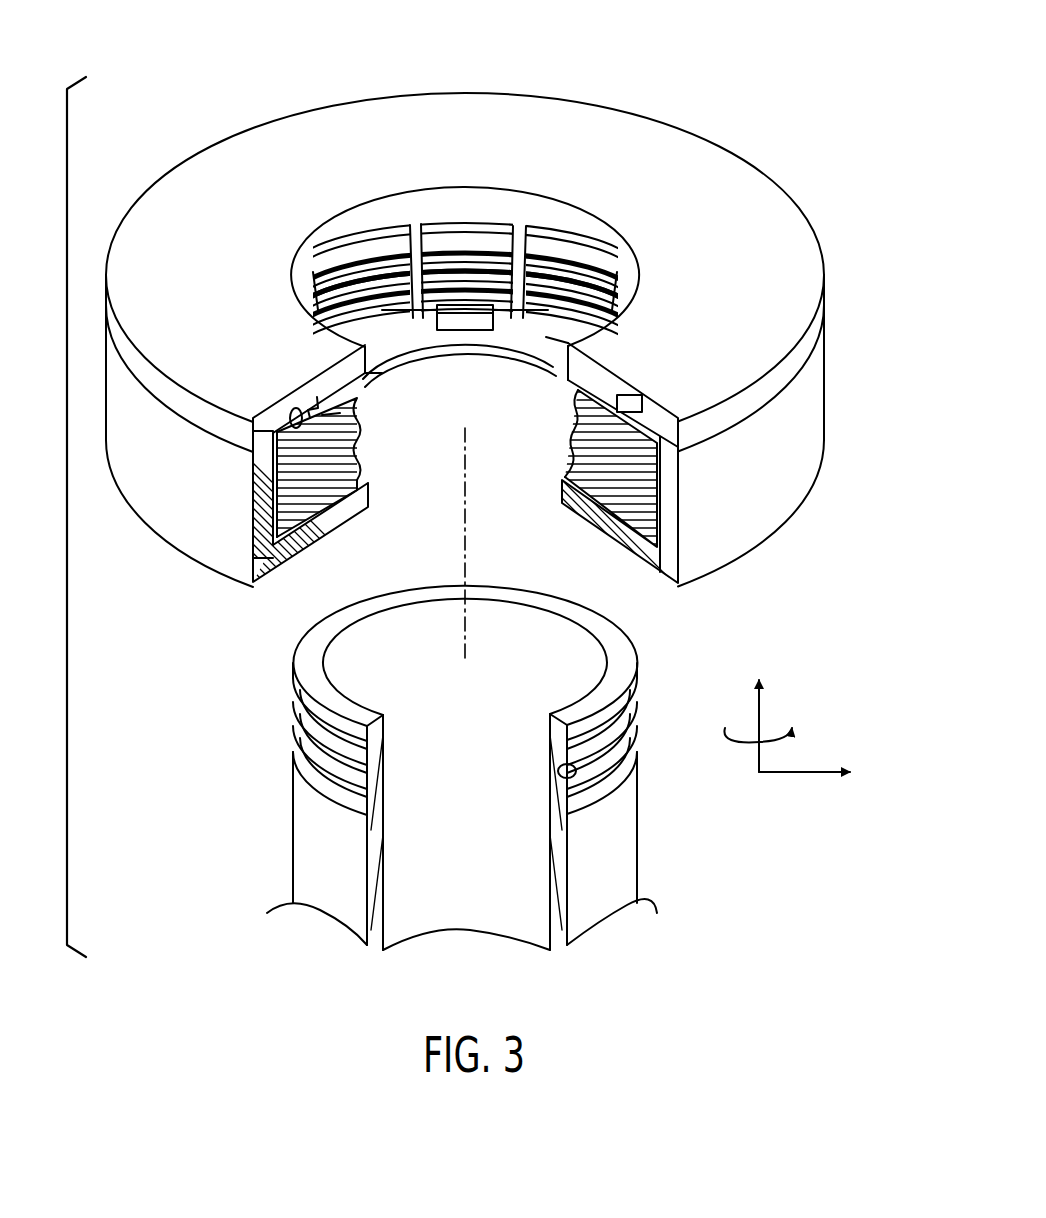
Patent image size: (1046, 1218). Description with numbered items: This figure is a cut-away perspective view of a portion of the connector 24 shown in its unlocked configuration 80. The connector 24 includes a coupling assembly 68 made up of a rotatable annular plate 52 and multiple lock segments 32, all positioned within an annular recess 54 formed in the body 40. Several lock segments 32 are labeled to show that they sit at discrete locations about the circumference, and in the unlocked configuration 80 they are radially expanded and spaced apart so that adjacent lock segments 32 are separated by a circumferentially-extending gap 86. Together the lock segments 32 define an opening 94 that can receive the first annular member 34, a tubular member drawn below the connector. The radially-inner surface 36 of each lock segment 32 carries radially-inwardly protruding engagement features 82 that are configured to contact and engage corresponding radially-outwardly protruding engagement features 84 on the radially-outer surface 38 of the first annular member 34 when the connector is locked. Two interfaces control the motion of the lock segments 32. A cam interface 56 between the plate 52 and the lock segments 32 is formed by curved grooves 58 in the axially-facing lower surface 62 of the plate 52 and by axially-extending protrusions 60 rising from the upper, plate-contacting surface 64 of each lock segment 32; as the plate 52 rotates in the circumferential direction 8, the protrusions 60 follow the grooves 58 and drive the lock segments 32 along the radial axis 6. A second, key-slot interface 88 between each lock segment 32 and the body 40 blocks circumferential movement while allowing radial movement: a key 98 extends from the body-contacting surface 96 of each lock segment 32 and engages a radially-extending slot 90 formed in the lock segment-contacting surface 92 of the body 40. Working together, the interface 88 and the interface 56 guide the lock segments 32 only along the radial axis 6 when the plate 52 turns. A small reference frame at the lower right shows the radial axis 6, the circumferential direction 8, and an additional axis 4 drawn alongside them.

The connector 24 is at (762, 52).
The unlocked configuration 80 is at (740, 96).
The body 40 is at (778, 500).
The lock segments 32 is at (448, 262).
The circumferentially-extending gap 86 is at (408, 232).
The interface 88 is at (485, 310).
The radially-extending slot 90 is at (355, 262).
The surface 92 is at (500, 318).
The surface 96 is at (408, 262).
The key 98 is at (418, 250).
The radially-inner surface 36 is at (380, 381).
The surface 62 is at (435, 367).
The plate 52 is at (262, 420).
The recess 54 is at (252, 537).
The interface 56 is at (318, 398).
The grooves 58 is at (290, 410).
The protrusions 60 is at (330, 415).
The surface 64 is at (272, 464).
The coupling assembly 68 is at (408, 483).
The engagement features 82 is at (367, 438).
The opening 94 is at (640, 602).
The first annular member 34 is at (563, 877).
The radially-outer surface 38 is at (563, 745).
The engagement features 84 is at (560, 783).
The axial direction 4 is at (758, 708).
The radial axis 6 is at (803, 772).
The circumferential direction 8 is at (737, 740).